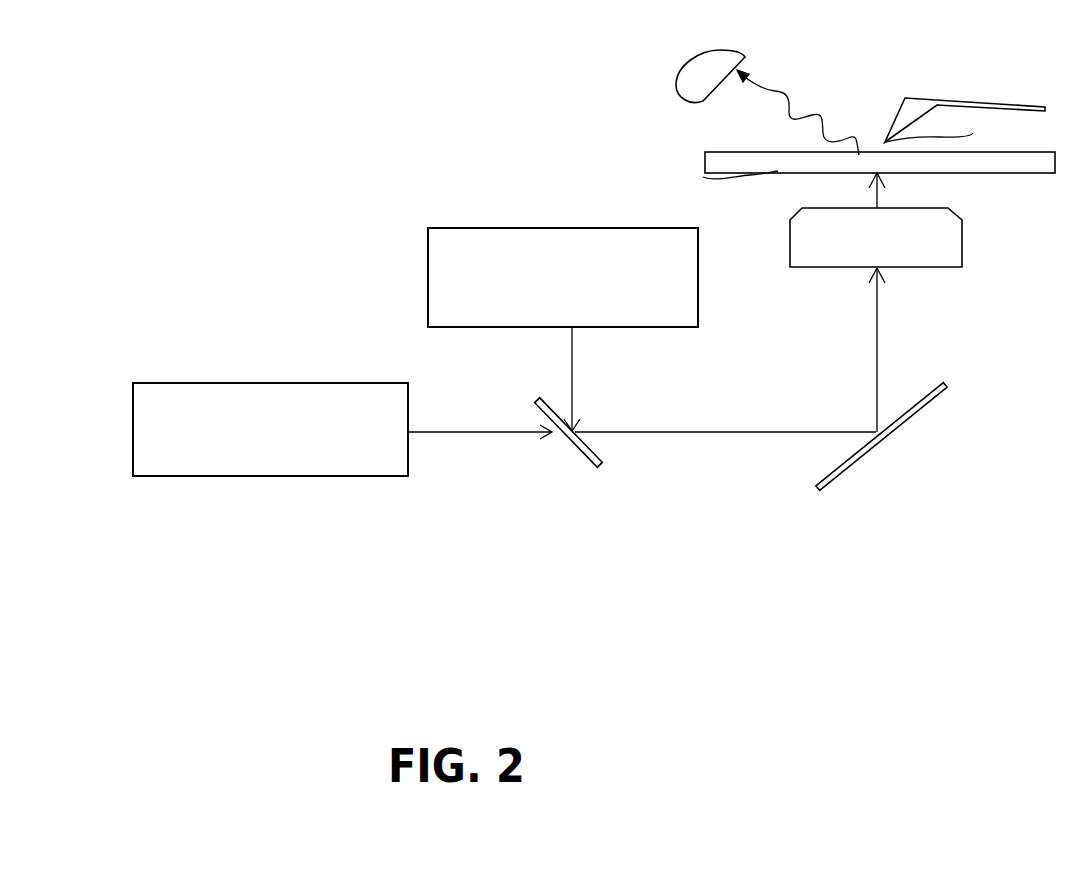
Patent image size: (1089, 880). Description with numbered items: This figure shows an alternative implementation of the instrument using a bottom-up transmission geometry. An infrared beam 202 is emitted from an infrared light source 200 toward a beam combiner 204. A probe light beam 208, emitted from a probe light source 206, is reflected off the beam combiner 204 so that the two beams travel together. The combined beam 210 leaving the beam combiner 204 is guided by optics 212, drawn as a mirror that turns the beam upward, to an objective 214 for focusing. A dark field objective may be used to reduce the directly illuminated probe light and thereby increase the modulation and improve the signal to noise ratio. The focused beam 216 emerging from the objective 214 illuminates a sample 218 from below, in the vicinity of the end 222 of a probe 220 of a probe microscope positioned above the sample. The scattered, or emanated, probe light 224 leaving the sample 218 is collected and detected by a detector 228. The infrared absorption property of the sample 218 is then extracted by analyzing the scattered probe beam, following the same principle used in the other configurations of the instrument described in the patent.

The infrared light source 200 is at (270, 429).
The infrared beam 202 is at (480, 449).
The beam combiner 204 is at (586, 450).
The probe light source 206 is at (563, 277).
The probe light beam 208 is at (589, 379).
The combined beam 210 is at (730, 350).
The optics 212 is at (893, 437).
The objective 214 is at (903, 237).
The focused beam 216 is at (903, 190).
The sample 218 is at (852, 181).
The probe 220 is at (965, 107).
The end of probe 222 is at (952, 136).
The scattered probe light 224 is at (798, 112).
The detector 228 is at (637, 50).